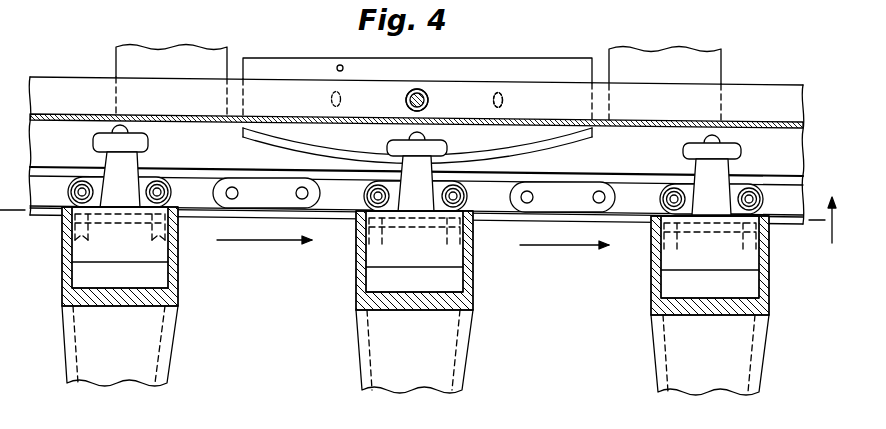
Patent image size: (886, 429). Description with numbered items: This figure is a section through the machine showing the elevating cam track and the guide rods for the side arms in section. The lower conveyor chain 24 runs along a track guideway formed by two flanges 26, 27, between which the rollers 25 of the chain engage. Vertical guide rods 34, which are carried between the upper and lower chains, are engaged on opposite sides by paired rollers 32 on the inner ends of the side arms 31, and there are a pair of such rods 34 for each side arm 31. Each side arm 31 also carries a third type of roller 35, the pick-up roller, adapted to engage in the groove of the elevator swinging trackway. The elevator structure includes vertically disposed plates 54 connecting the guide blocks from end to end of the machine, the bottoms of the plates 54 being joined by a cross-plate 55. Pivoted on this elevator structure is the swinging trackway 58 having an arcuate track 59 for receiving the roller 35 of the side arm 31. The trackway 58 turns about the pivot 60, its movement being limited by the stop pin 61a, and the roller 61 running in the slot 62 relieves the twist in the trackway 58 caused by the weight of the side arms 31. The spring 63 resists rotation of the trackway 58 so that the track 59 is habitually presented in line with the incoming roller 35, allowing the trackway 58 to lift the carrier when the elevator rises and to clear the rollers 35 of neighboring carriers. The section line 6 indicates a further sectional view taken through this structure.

The section line 6- 6 is at (822, 233).
The lower conveyor chain 24 is at (500, 205).
The roller 25 is at (300, 212).
The flange 26 is at (253, 172).
The flange 27 is at (345, 222).
The side arm 31 is at (148, 343).
The roller 32 is at (72, 252).
The vertical guide rod 34 is at (663, 198).
The roller 35 is at (148, 143).
The vertically disposed plate 54 is at (776, 118).
The cross-plate 55 is at (176, 60).
The elevator swinging trackway 58 is at (543, 70).
The arcuate track 59 is at (540, 135).
The pivot 60 is at (414, 89).
The roller 61 is at (504, 100).
The stop pin 61a is at (339, 64).
The slot 62 is at (492, 97).
The spring 63 is at (425, 92).